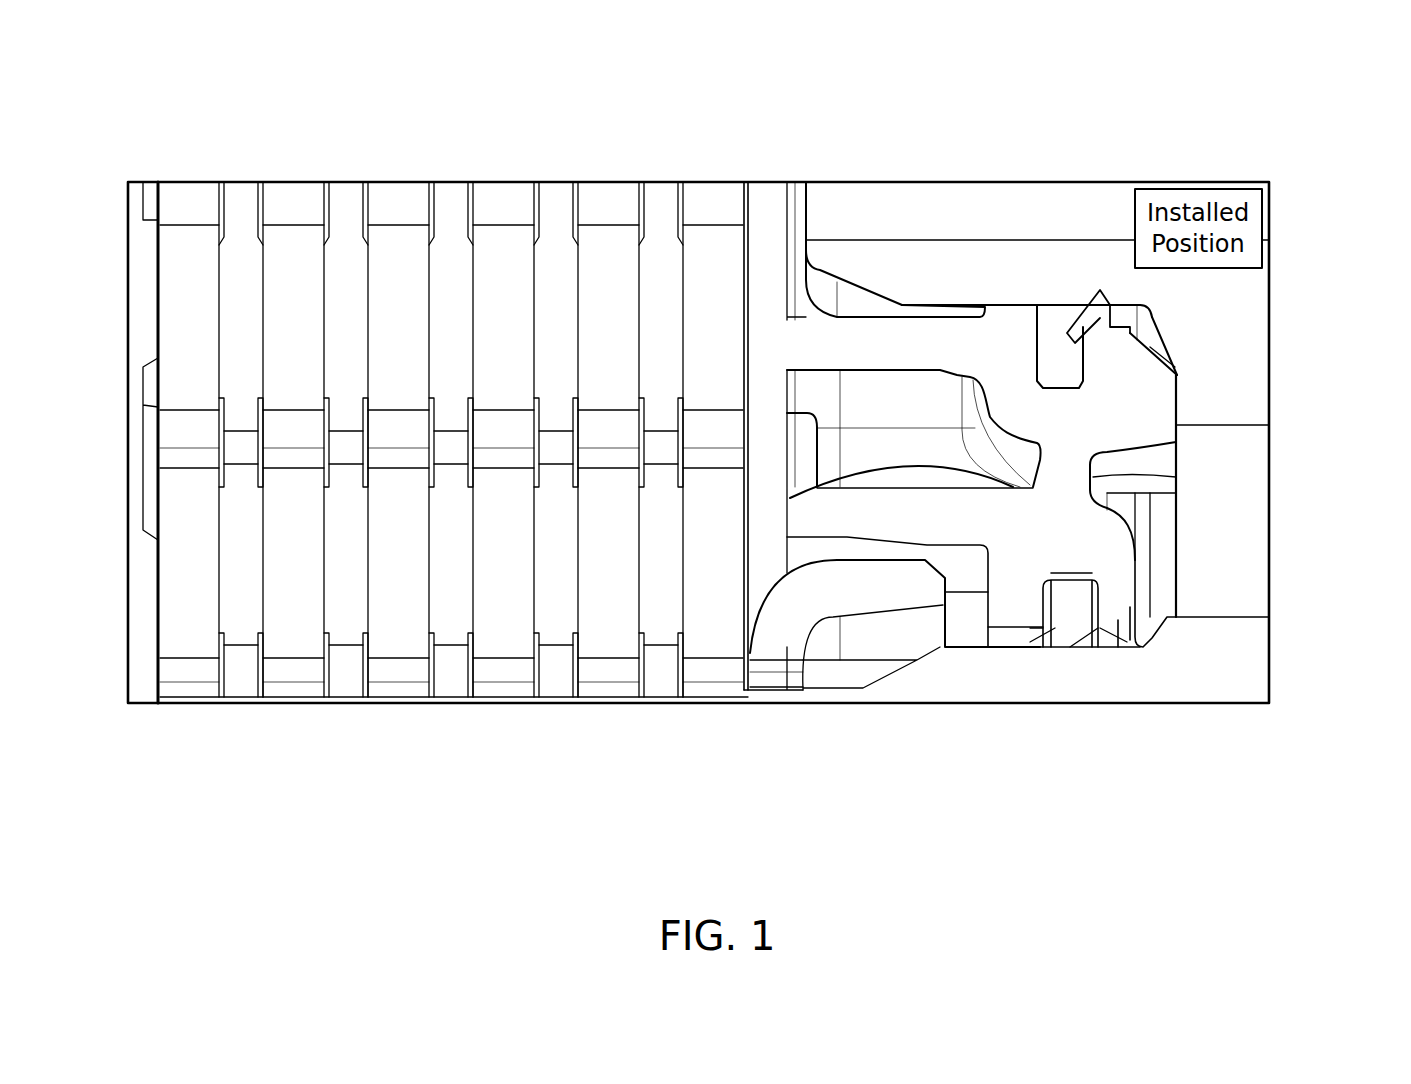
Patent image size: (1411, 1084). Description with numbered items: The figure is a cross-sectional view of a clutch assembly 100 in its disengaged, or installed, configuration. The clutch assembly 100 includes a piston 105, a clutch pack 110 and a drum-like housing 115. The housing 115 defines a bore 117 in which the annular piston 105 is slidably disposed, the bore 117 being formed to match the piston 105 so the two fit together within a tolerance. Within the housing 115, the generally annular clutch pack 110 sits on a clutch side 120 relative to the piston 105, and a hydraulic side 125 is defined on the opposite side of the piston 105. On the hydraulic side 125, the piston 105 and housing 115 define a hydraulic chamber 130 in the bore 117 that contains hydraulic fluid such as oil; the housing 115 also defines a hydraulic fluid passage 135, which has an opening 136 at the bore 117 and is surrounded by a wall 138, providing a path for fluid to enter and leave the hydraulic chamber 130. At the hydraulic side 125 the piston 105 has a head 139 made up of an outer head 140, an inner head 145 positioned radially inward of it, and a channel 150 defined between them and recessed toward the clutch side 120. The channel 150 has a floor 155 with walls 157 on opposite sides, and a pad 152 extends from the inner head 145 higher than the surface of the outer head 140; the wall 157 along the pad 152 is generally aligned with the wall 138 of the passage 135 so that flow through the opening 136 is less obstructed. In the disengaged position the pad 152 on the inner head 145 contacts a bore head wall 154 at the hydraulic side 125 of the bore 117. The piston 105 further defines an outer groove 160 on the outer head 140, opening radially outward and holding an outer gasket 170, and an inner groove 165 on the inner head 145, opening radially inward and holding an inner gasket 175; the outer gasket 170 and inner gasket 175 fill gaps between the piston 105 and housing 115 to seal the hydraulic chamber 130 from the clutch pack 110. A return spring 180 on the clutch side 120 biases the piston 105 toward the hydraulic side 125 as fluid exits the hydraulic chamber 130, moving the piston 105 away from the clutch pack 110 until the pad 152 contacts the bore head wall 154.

The clutch assembly 100 is at (166, 94).
The clutch pack 110 is at (448, 732).
The clutch side 120 is at (100, 435).
The housing 115 is at (907, 267).
The inner gasket 175 is at (1073, 314).
The inner groove 165 is at (1050, 353).
The head 139 is at (1150, 345).
The inner head 145 is at (1150, 370).
The pad 152 is at (1163, 392).
The bore head wall 154 is at (1177, 410).
The hydraulic side 125 is at (1315, 408).
The walls 157 is at (1227, 487).
The wall 138 is at (1135, 502).
The floor 155 is at (1180, 450).
The channel 150 is at (1186, 578).
The opening 136 is at (1225, 607).
The hydraulic fluid passage 135 is at (1160, 457).
The hydraulic chamber 130 is at (1162, 590).
The outer head 140 is at (1118, 620).
The outer gasket 170 is at (1073, 610).
The outer groove 160 is at (1055, 630).
The piston 105 is at (1005, 610).
The bore 117 is at (912, 486).
The return spring 180 is at (777, 647).